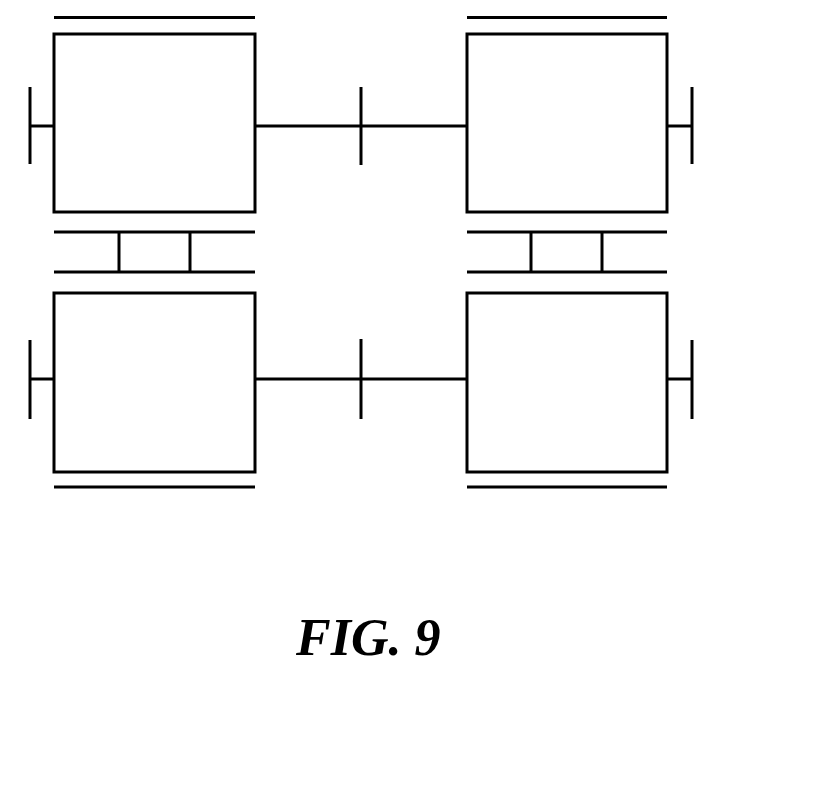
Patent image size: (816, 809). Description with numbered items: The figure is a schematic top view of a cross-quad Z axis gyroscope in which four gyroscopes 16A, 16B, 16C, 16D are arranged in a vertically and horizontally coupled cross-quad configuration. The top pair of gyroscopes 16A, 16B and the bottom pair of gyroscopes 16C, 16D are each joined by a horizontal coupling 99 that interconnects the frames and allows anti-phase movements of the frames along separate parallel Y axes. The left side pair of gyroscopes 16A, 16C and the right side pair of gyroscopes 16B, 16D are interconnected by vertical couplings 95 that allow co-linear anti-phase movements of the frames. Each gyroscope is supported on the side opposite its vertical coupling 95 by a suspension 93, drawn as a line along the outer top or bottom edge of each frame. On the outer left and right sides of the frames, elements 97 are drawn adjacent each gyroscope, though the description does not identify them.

The gyroscope 16A is at (132, 140).
The gyroscope 16B is at (538, 140).
The gyroscope 16C is at (125, 392).
The gyroscope 16D is at (542, 392).
The suspension 93 is at (360, 254).
The coupling 95 is at (382, 252).
The side terminal 97 is at (360, 272).
The coupling 99 is at (361, 271).